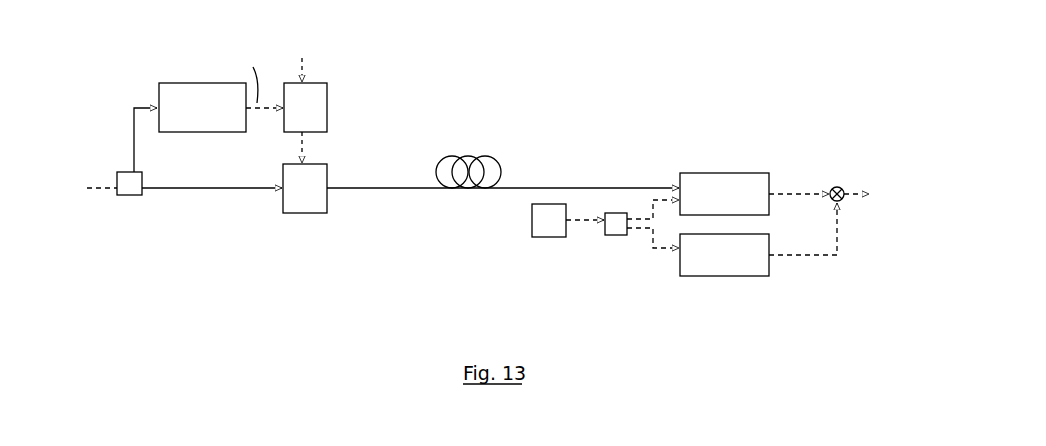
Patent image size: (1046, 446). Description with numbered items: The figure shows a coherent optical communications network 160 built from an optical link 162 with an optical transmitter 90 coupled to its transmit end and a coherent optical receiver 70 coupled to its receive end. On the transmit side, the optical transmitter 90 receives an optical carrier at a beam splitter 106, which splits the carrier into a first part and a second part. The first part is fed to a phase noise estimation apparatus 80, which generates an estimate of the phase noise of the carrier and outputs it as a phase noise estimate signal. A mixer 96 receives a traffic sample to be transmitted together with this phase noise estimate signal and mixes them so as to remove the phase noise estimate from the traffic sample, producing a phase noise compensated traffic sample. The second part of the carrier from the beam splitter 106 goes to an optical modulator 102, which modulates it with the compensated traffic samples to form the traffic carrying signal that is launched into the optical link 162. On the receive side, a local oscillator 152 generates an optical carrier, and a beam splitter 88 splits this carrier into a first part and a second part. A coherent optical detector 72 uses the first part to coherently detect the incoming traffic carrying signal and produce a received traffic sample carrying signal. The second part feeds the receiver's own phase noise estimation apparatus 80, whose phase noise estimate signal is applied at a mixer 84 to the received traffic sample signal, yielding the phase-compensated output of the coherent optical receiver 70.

The coherent optical communications network 160 is at (607, 48).
The optical transmitter 90 is at (217, 224).
The beam splitter 106 is at (130, 196).
The phase noise estimation apparatus 80 is at (177, 93).
The mixer 96 is at (318, 100).
The optical modulator 102 is at (307, 203).
The optical link 162 is at (423, 192).
The local oscillator 152 is at (550, 238).
The beam splitter 88 is at (618, 238).
The coherent optical receiver 70 is at (727, 143).
The coherent optical detector 72 is at (745, 182).
The mixer 84 is at (838, 185).